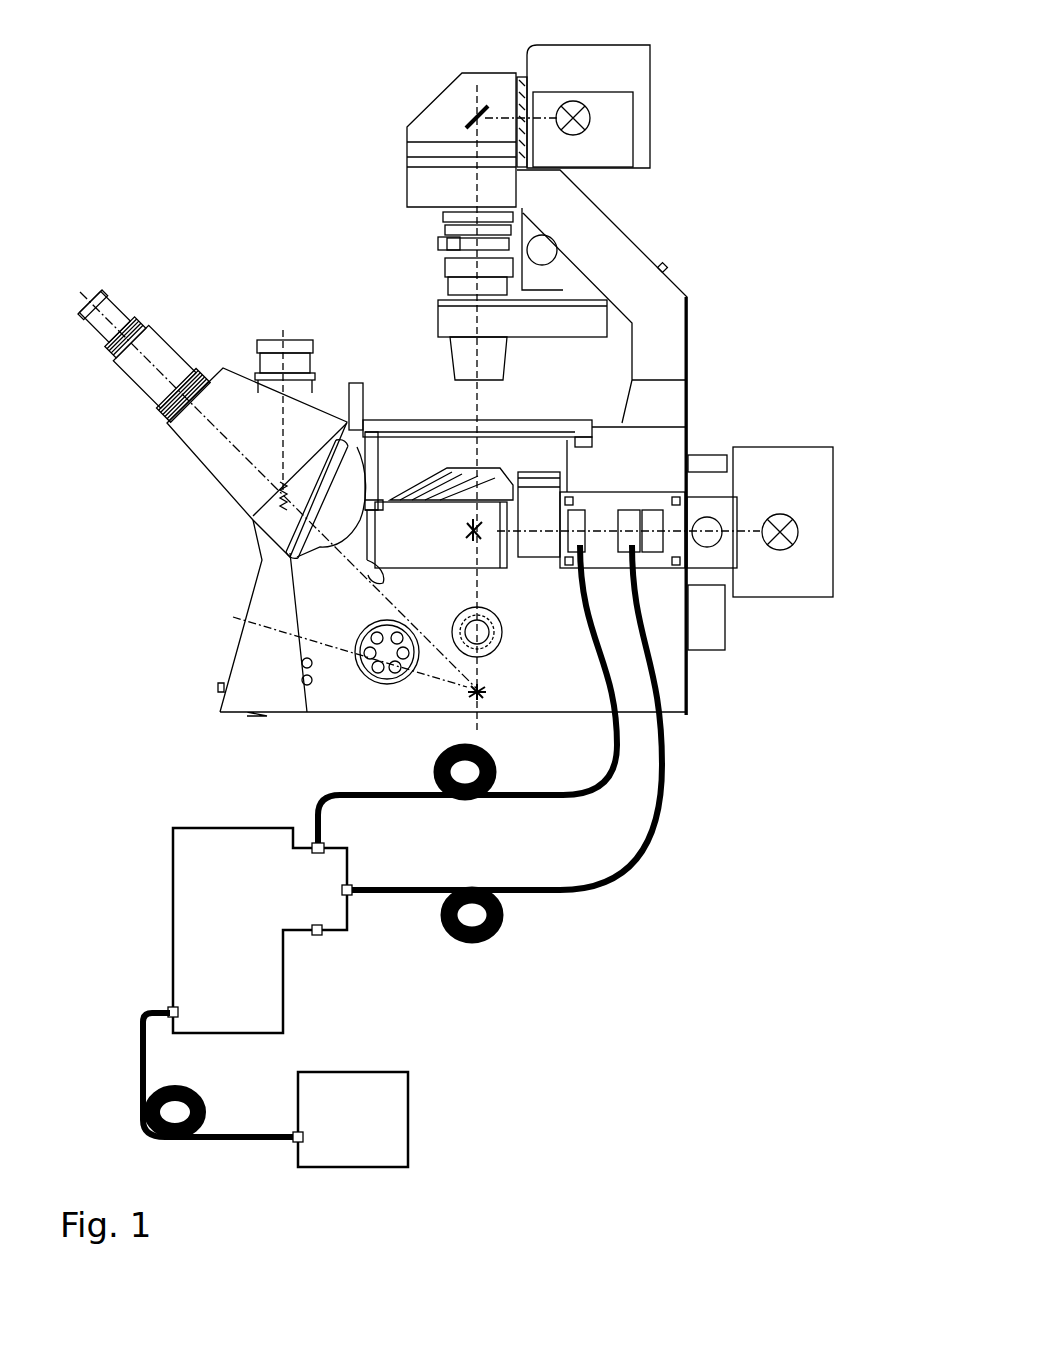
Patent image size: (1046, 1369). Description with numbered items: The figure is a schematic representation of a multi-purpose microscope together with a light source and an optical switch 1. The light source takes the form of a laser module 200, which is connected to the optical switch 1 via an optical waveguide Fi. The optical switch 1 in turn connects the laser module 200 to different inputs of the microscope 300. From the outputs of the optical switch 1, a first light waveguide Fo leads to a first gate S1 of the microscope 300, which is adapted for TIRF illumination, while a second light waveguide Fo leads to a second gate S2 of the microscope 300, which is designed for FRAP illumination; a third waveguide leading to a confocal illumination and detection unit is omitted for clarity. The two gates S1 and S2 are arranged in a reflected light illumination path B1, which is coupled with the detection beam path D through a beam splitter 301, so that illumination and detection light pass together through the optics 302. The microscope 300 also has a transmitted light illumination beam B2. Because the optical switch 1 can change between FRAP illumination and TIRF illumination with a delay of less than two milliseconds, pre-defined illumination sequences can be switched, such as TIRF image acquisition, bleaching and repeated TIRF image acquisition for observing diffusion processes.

The optical switch 1 is at (222, 825).
The laser module 200 is at (413, 1102).
The microscope 300 is at (643, 248).
The beam splitter 301 is at (470, 532).
The optics 302 is at (470, 463).
The reflected light illumination path B1 is at (745, 530).
The transmitted light illumination beam B2 is at (477, 188).
The first gate S1 is at (580, 540).
The second gate S2 is at (630, 515).
The detection beam path D is at (482, 594).
The light waveguide Fo is at (617, 757).
The optical waveguide Fi is at (140, 1068).